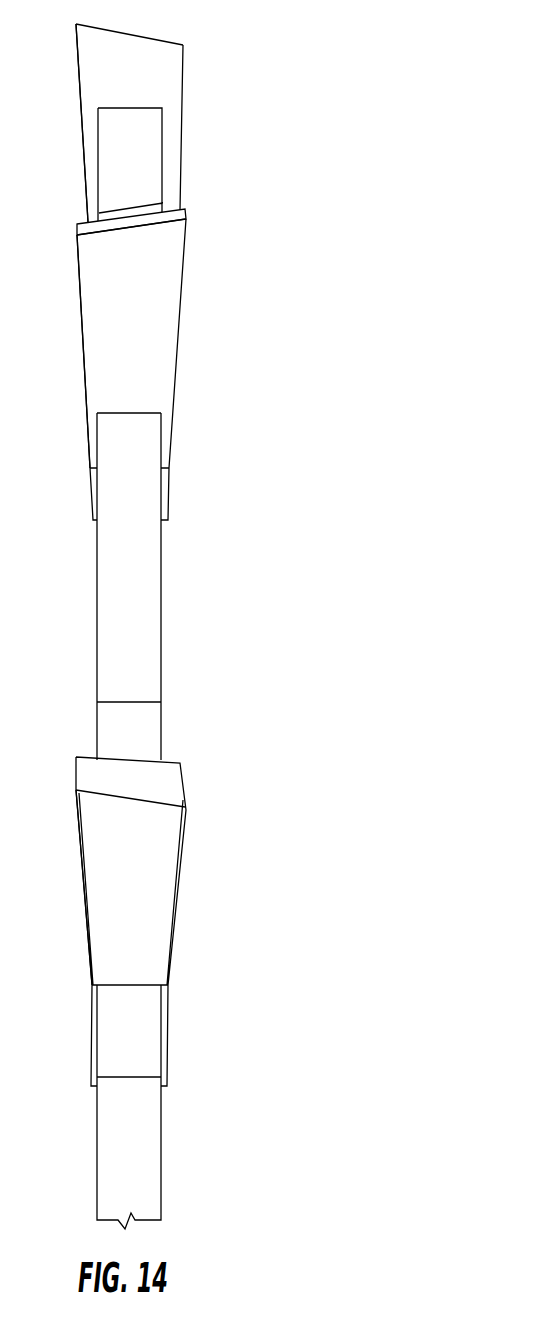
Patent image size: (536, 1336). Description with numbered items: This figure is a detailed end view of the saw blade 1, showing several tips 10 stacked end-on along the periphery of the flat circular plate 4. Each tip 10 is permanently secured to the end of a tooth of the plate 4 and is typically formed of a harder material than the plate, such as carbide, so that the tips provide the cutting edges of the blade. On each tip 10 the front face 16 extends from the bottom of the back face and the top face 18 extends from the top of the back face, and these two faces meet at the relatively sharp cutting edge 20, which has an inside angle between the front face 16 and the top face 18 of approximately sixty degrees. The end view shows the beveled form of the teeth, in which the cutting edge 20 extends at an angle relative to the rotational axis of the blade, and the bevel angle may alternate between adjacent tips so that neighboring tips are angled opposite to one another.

The saw blade 1 is at (263, 578).
The plate 4 is at (161, 1130).
The tip 10 is at (180, 127).
The front face 16 is at (105, 77).
The top face 18 is at (173, 213).
The cutting edge 20 is at (150, 38).